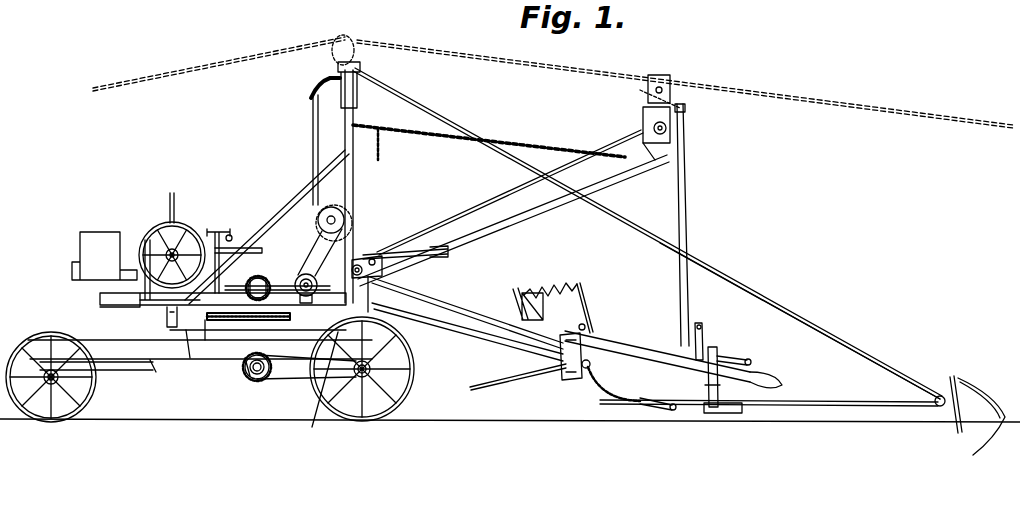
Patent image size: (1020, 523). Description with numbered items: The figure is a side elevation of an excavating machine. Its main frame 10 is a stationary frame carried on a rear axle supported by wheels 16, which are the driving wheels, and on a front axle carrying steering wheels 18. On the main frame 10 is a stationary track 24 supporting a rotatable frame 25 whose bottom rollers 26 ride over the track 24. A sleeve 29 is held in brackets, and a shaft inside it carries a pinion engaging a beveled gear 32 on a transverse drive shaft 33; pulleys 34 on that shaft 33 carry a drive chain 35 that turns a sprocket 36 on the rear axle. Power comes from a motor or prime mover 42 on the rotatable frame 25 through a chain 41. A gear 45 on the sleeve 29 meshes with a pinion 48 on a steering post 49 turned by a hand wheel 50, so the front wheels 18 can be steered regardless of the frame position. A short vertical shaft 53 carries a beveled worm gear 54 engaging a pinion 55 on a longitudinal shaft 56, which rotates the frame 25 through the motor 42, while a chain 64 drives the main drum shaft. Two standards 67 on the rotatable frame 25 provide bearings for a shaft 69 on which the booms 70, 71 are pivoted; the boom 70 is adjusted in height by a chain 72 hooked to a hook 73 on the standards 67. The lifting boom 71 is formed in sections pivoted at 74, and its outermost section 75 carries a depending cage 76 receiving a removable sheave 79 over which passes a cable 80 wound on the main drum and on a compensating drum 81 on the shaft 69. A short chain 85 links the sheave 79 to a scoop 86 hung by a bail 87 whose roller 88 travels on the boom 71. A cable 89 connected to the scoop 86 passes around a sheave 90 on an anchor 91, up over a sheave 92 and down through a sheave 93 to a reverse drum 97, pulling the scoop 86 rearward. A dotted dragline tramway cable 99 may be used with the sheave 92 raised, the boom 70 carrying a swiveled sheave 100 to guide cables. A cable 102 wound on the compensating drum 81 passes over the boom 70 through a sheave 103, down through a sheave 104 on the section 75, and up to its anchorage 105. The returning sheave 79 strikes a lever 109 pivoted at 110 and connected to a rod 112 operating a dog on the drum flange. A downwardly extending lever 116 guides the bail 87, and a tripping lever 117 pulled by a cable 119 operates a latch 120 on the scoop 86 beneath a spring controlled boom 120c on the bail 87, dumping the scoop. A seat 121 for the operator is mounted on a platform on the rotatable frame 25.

The main frame 10 is at (195, 358).
The wheels 16 is at (418, 382).
The wheels 18 is at (92, 392).
The stationary track 24 is at (188, 332).
The rotatable frame 25 is at (115, 300).
The rollers 26 is at (167, 322).
The sleeve 29 is at (257, 327).
The beveled gear 32 is at (258, 381).
The drive shaft 33 is at (270, 378).
The pulleys 34 is at (244, 378).
The drive chain 35 is at (321, 389).
The sprocket 36 is at (416, 403).
The chain 41 is at (262, 278).
The motor or prime mover 42 is at (104, 232).
The gear 45 is at (375, 338).
The pinion 48 is at (210, 320).
The steering post 49 is at (240, 248).
The hand wheel 50 is at (218, 232).
The vertically disposed shaft 53 is at (282, 364).
The beveled worm gear 54 is at (405, 328).
The pinion 55 is at (310, 274).
The longitudinally disposed shaft 56 is at (300, 262).
The chain 64 is at (283, 262).
The standards 67 is at (352, 204).
The shaft 69 is at (375, 249).
The boom 70 is at (550, 202).
The lifting boom 71 is at (463, 293).
The chain 72 is at (527, 140).
The hook 73 is at (377, 128).
The pivot 74 is at (522, 290).
The outermost section 75 is at (622, 333).
The cage 76 is at (574, 380).
The sheave 79 is at (590, 369).
The cable 80 is at (465, 330).
The compensating drum 81 is at (357, 254).
The short chain or cable 85 is at (634, 394).
The scoop 86 is at (718, 414).
The bail 87 is at (708, 381).
The roller 88 is at (715, 350).
The cable 89 is at (843, 347).
The sheave 90 is at (943, 396).
The anchor 91 is at (968, 382).
The sheave 92 is at (357, 71).
The sheave 93 is at (318, 90).
The reverse drum 97 is at (332, 204).
The dragline tramway cable 99 is at (806, 97).
The sheave 100 is at (672, 86).
The cable 102 is at (612, 143).
The sheave 103 is at (646, 120).
The sheave 104 is at (680, 338).
The cable anchorage 105 is at (690, 108).
The lever 109 is at (586, 307).
The pivotal mounting 110 is at (590, 322).
The rod 112 is at (555, 283).
The downwardly extending lever 116 is at (776, 381).
The tripping lever 117 is at (704, 344).
The cable 119 is at (510, 385).
The latch 120 is at (780, 401).
The spring controlled boom 120c is at (750, 360).
The seat 121 is at (148, 240).